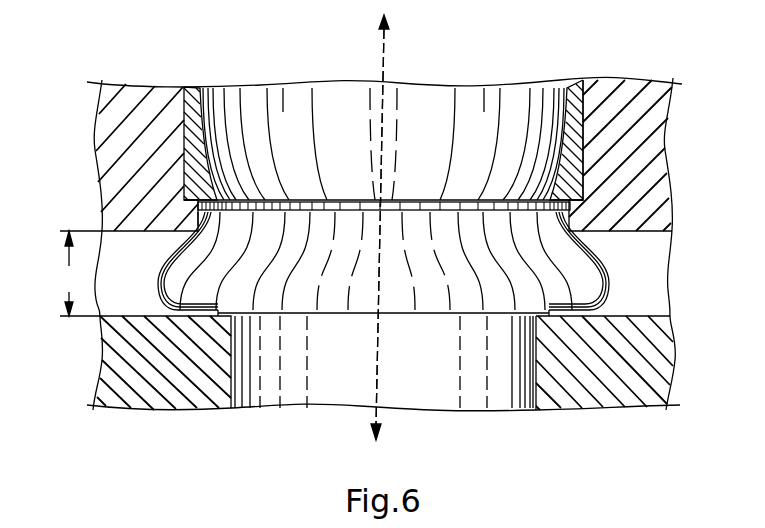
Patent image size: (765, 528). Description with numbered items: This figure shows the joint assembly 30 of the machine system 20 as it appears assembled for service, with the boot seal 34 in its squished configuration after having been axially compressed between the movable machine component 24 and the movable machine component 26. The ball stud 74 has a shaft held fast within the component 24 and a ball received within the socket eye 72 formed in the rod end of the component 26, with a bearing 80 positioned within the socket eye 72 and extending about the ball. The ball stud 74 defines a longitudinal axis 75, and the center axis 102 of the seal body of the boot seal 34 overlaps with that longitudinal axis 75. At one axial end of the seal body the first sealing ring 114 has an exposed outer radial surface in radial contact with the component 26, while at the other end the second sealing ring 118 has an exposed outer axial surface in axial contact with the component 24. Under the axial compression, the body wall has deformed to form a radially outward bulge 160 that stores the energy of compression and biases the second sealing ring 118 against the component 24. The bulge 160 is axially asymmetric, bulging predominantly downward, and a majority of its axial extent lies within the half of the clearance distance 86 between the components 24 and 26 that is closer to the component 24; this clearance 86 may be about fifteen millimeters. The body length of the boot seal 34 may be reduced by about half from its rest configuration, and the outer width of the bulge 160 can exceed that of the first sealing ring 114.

The machine system 20 is at (58, 141).
The movable machine component 24 is at (665, 378).
The movable machine component 26 is at (665, 105).
The joint assembly 30 is at (422, 276).
The boot seal 34 is at (590, 243).
The socket eye 72 is at (193, 231).
The ball stud 74 is at (287, 92).
The longitudinal axis 75 is at (387, 44).
The center axis 102 is at (380, 227).
The bearing 80 is at (578, 92).
The clearance distance 86 is at (80, 273).
The first sealing ring 114 is at (570, 204).
The second sealing ring 118 is at (403, 322).
The radially outward bulge 160 is at (611, 289).